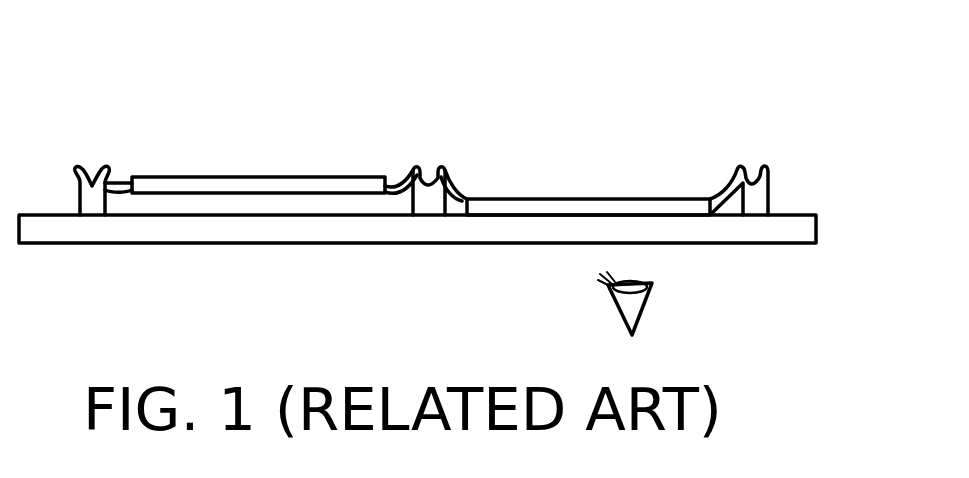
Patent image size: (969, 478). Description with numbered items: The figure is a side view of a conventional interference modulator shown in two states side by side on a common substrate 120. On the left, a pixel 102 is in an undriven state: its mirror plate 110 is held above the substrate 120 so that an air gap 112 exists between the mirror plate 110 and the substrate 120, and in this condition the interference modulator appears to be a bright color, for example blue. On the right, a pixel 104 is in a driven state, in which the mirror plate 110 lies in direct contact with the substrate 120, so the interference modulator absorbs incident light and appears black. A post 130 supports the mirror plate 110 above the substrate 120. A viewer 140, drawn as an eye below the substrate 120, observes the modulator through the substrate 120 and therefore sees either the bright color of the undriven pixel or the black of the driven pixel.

The pixel in an undriven state 102 is at (238, 125).
The pixel in a driven state 104 is at (610, 125).
The mirror plate 110 is at (508, 202).
The air gap 112 is at (187, 205).
The substrate 120 is at (793, 232).
The post 130 is at (757, 193).
The viewer 140 is at (647, 308).